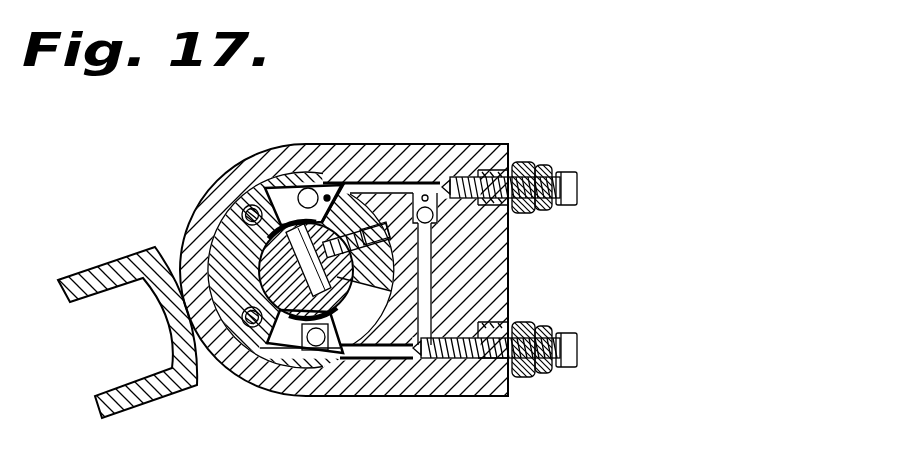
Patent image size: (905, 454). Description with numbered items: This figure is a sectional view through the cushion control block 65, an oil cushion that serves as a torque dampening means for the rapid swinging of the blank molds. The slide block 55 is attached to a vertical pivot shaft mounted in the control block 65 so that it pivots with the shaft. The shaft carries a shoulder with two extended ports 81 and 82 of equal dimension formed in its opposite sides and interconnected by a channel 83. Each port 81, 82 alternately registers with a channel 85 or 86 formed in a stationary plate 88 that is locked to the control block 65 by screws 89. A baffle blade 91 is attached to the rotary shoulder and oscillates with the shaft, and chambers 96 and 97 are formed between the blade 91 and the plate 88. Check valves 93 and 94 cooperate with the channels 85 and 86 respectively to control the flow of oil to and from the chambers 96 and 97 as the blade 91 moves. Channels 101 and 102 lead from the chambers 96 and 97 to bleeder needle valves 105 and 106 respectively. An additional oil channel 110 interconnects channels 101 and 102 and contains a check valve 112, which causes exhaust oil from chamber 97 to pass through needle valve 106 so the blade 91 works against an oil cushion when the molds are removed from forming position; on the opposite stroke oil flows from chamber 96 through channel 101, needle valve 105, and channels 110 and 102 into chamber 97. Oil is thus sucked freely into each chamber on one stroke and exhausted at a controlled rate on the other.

The slide block 55 is at (135, 408).
The cushion control block 65 is at (388, 392).
The extended port 81 is at (336, 292).
The extended port 82 is at (252, 245).
The channel 83 is at (340, 325).
The channel 85 is at (270, 345).
The channel 86 is at (312, 183).
The stationary plate 88 is at (262, 266).
The screws 89 is at (252, 205).
The baffle blade 91 is at (370, 190).
The check valve 93 is at (317, 350).
The check valve 94 is at (314, 188).
The chamber 96 is at (340, 310).
The chamber 97 is at (352, 205).
The channel 101 is at (420, 392).
The channel 102 is at (428, 193).
The bleeder needle valve 105 is at (548, 372).
The bleeder needle valve 106 is at (538, 166).
The oil channel 110 is at (432, 268).
The check valve 112 is at (430, 207).